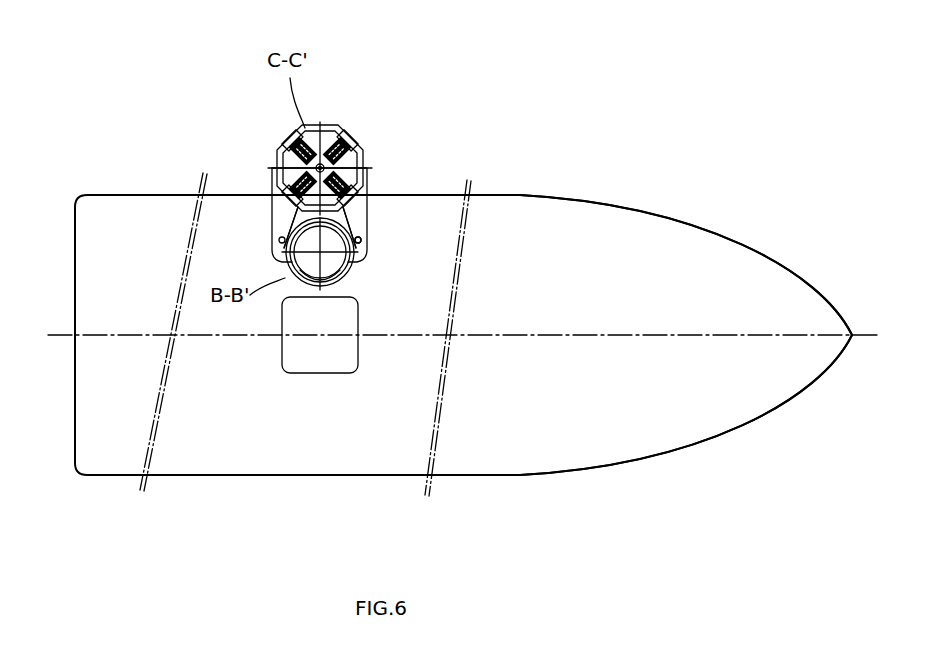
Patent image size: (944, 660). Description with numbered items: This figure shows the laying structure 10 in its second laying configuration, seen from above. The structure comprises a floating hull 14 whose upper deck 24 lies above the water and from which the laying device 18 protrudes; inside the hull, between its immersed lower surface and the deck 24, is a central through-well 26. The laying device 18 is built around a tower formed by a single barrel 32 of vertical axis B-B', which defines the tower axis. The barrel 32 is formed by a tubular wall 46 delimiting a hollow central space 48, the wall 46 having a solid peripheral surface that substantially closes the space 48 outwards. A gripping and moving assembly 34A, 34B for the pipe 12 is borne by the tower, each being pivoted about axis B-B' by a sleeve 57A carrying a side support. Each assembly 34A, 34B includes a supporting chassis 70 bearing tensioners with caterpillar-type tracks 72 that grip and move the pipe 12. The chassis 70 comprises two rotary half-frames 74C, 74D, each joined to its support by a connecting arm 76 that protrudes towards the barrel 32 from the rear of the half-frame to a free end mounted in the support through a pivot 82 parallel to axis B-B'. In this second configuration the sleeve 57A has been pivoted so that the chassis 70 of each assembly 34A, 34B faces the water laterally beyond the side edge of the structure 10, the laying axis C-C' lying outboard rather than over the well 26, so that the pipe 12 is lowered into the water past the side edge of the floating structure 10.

The laying structure 10 is at (106, 510).
The pipe 12 is at (330, 162).
The floating hull 14 is at (558, 455).
The laying device 18 is at (156, 273).
The upper deck 24 is at (628, 220).
The central through-well 26 is at (331, 375).
The barrel 32 is at (275, 264).
The gripping and moving assembly 34A is at (242, 122).
The gripping and moving assembly 34B is at (311, 185).
The tubular wall 46 is at (335, 280).
The hollow central space 48 is at (338, 270).
The sleeve 57A is at (325, 255).
The supporting chassis 70 is at (378, 118).
The caterpillar-type tracks 72 is at (345, 125).
The rotary half-frame 74C is at (268, 232).
The rotary half-frame 74D is at (377, 172).
The connecting arm 76 is at (360, 215).
The pivot 82 is at (362, 240).